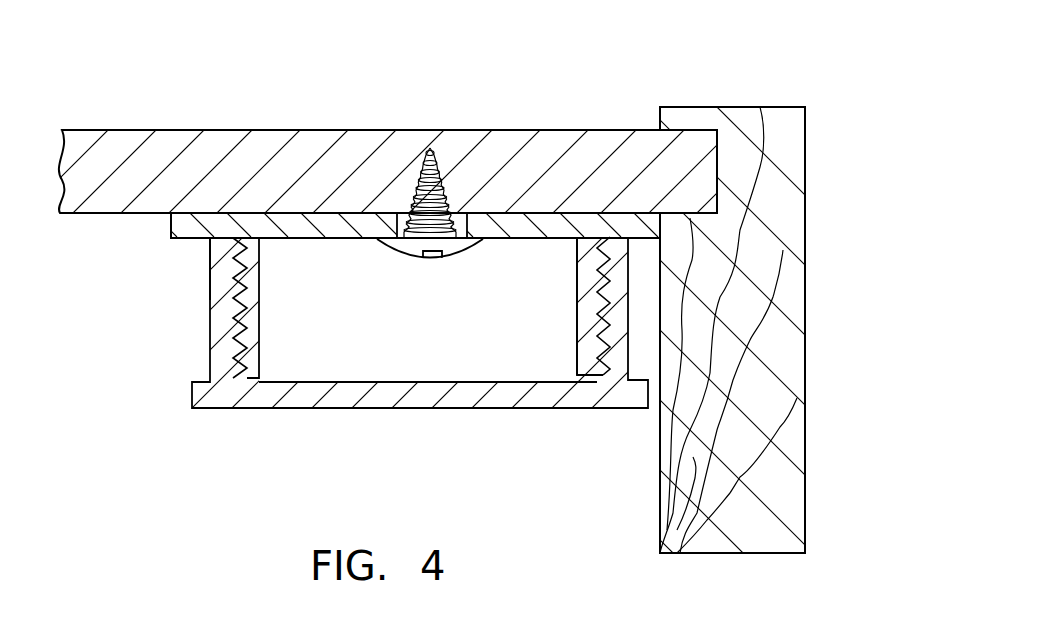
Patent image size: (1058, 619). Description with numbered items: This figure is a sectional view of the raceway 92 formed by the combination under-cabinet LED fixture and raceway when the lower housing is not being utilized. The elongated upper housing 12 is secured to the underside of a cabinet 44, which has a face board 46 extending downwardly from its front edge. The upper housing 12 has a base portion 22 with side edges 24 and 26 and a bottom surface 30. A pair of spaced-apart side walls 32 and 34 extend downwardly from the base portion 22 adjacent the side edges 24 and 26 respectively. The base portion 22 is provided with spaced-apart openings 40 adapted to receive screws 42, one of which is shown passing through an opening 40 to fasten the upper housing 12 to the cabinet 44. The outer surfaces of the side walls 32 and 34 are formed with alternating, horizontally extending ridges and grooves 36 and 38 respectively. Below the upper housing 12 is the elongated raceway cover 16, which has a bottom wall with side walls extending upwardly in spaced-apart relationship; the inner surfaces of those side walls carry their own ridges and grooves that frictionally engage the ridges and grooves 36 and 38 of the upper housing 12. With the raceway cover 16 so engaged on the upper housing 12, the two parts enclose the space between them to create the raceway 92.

The upper housing 12 is at (189, 248).
The raceway cover 16 is at (333, 414).
The base portion 22 is at (348, 234).
The side edge 24 is at (172, 228).
The side edge 26 is at (667, 222).
The bottom surface 30 is at (522, 238).
The side wall 32 is at (260, 315).
The side wall 34 is at (578, 310).
The ridges and grooves 36 is at (237, 358).
The ridges and grooves 38 is at (603, 347).
The openings 40 is at (457, 213).
The screw 42 is at (458, 248).
The cabinet 44 is at (297, 140).
The face board 46 is at (793, 424).
The raceway 92 is at (412, 357).